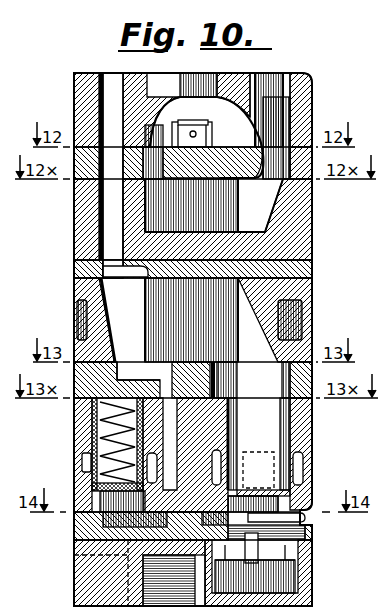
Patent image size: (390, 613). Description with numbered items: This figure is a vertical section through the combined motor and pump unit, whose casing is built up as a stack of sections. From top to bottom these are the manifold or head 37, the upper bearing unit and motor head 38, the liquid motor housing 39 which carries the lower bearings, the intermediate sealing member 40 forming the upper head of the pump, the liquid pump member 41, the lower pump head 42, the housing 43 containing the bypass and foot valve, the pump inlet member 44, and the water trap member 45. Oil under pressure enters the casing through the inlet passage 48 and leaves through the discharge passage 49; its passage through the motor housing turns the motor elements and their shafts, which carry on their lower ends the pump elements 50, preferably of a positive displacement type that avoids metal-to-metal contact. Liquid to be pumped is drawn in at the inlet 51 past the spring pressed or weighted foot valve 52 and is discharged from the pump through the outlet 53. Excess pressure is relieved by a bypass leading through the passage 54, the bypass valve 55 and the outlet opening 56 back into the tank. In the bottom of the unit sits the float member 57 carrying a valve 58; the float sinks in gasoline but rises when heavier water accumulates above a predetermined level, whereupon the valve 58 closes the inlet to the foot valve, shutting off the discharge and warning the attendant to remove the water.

The manifold or head 37 is at (78, 87).
The upper bearing unit and motor head 38 is at (304, 182).
The liquid motor housing 39 is at (82, 227).
The intermediate sealing member 40 is at (76, 270).
The liquid pump member 41 is at (308, 290).
The lower pump head 42 is at (88, 389).
The housing 43 is at (302, 441).
The pump inlet member 44 is at (82, 527).
The water trap member 45 is at (82, 583).
The inlet passage 48 is at (272, 85).
The discharge passage 49 is at (205, 83).
The pump elements 50 is at (235, 322).
The inlet 51 is at (315, 518).
The foot valve 52 is at (259, 455).
The outlet 53 is at (123, 82).
The bypass passage 54 is at (86, 476).
The bypass valve 55 is at (97, 449).
The outlet opening 56 is at (85, 463).
The float member 57 is at (305, 585).
The valve 58 is at (305, 538).